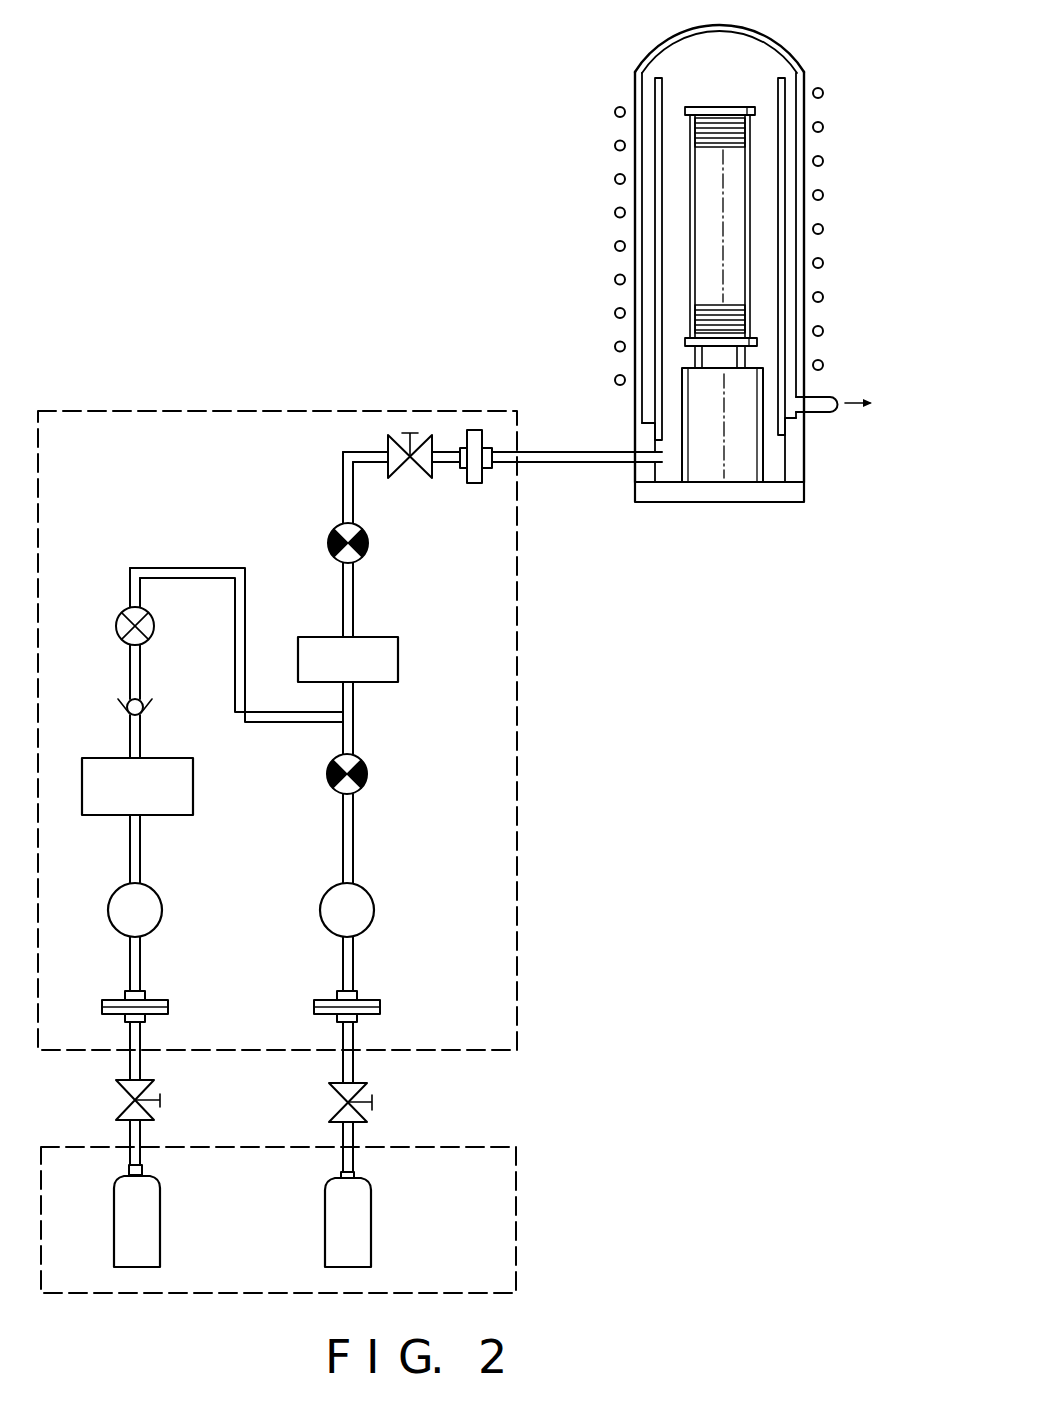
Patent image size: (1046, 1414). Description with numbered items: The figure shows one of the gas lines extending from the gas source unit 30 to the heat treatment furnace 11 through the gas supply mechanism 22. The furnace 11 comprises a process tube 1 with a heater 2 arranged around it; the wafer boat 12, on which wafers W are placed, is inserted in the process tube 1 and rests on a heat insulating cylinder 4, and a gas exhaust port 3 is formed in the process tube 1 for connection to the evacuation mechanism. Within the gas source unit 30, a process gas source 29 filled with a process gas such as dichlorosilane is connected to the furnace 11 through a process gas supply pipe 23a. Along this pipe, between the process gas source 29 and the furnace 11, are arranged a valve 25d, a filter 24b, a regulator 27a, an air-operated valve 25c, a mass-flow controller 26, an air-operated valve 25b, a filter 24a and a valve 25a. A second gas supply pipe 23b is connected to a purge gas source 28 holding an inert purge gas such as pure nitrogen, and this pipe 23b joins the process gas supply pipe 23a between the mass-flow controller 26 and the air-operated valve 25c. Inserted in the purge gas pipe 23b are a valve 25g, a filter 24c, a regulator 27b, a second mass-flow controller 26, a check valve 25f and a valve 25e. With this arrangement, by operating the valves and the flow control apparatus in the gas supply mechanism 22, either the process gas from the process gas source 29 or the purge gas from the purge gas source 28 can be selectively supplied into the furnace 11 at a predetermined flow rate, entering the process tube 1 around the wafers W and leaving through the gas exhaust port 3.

The process tube 1 is at (657, 53).
The heat treatment furnace 11 is at (800, 57).
The heater 2 is at (616, 106).
The wafer boat 12 is at (717, 106).
The wafers W is at (709, 149).
The gas exhaust port 3 is at (826, 397).
The heat insulating cylinder 4 is at (713, 472).
The gas supply mechanism 22 is at (519, 781).
The process gas supply pipe 23a is at (343, 582).
The gas supply pipe 23b is at (130, 972).
The filter 24a is at (473, 430).
The filter 24b is at (381, 1007).
The filter 24c is at (169, 1007).
The valve 25a is at (427, 476).
The air-operated valve 25b is at (370, 548).
The air-operated valve 25c is at (367, 777).
The valve 25d is at (367, 1092).
The valve 25e is at (116, 636).
The check valve 25f is at (122, 712).
The valve 25g is at (157, 1092).
The mass-flow controller 26 is at (399, 660).
The regulator 27a is at (374, 913).
The regulator 27b is at (162, 913).
The purge gas source 28 is at (161, 1220).
The process gas source 29 is at (371, 1222).
The gas source unit 30 is at (518, 1213).